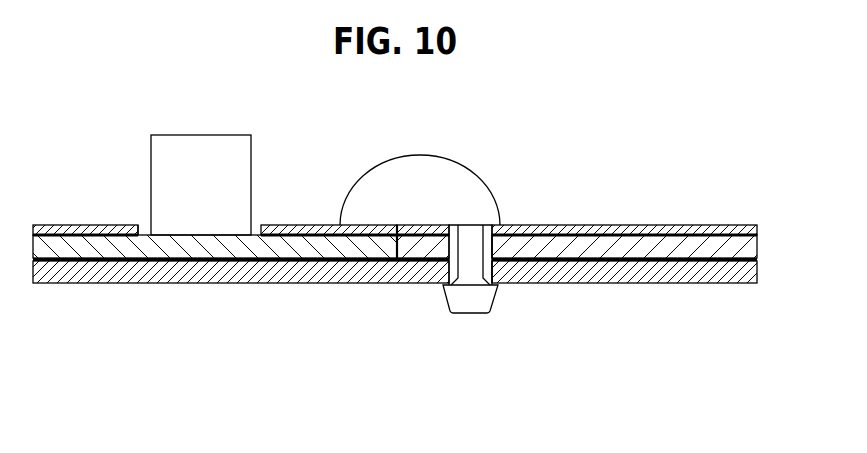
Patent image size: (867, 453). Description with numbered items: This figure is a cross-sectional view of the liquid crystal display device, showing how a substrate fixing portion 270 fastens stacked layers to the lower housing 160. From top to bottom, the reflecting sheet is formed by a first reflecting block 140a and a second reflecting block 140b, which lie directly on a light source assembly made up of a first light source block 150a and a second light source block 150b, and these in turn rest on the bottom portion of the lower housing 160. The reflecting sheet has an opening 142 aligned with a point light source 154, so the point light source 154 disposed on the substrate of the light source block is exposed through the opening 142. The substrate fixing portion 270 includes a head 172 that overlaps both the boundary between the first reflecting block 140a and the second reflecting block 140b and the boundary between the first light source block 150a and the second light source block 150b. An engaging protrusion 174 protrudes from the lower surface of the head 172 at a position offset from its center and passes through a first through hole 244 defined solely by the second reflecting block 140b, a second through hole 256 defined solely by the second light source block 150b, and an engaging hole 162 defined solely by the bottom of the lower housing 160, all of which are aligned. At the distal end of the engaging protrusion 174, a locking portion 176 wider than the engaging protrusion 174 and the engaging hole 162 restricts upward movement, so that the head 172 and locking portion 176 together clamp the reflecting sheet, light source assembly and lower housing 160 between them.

The first reflecting block 140a is at (67, 230).
The second reflecting block 140b is at (406, 228).
The opening 142 is at (143, 223).
The first light source block 150a is at (95, 250).
The second light source block 150b is at (433, 223).
The point light source 154 is at (202, 148).
The lower housing 160 is at (188, 272).
The engaging hole 162 is at (497, 270).
The head 172 is at (420, 238).
The engaging protrusion 174 is at (465, 253).
The locking portion 176 is at (470, 333).
The first through hole 244 is at (505, 222).
The second through hole 256 is at (497, 247).
The substrate fixing portion 270 is at (432, 324).